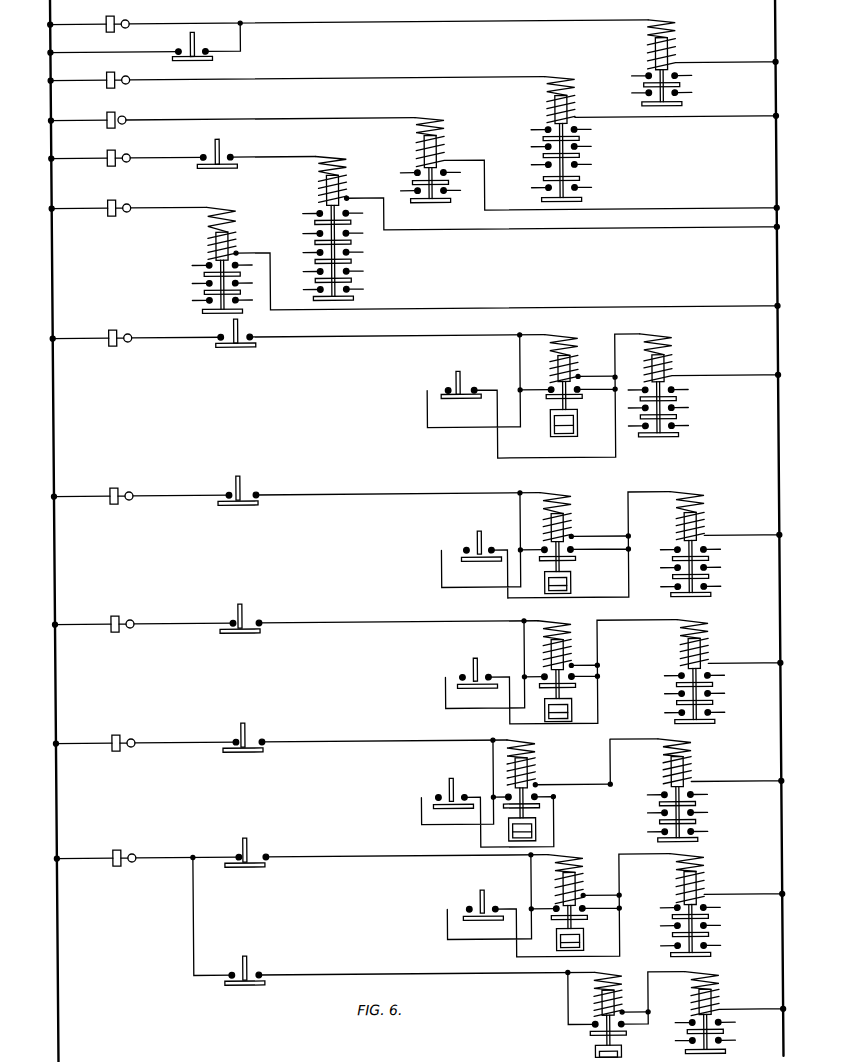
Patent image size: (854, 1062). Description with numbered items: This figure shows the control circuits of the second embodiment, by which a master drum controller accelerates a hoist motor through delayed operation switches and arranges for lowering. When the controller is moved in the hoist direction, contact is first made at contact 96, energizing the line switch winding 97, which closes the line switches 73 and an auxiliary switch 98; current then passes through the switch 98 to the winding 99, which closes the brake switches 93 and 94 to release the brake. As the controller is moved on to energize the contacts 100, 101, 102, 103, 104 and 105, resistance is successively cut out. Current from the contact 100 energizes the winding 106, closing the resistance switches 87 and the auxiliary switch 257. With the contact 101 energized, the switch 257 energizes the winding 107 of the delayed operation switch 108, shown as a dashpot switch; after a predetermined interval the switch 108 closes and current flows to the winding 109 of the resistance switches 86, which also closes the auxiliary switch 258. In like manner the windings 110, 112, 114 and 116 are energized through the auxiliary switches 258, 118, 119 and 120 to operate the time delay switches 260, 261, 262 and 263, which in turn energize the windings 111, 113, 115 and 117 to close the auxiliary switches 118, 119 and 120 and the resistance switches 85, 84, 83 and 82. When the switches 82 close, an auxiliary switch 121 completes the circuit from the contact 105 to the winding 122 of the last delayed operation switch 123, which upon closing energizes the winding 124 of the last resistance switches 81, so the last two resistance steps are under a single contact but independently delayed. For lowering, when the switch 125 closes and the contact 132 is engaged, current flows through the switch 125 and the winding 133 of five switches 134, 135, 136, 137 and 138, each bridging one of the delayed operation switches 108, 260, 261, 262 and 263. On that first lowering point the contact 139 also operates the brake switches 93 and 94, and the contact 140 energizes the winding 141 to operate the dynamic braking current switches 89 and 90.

The contact 139 is at (129, 28).
The auxiliary switch 98 is at (212, 55).
The contact 96 is at (129, 84).
The contact 140 is at (125, 124).
The contact 132 is at (129, 162).
The switch 125 is at (225, 160).
The contact 100 is at (129, 207).
The winding 99 is at (676, 29).
The brake switch 93 is at (692, 81).
The brake switch 94 is at (692, 98).
The line switch winding 97 is at (574, 87).
The line switch 73 is at (591, 134).
The winding 141 is at (440, 125).
The dynamic braking current switch 89 is at (448, 176).
The dynamic braking current switch 90 is at (448, 194).
The winding 133 is at (338, 165).
The switch 134 is at (316, 215).
The switch 135 is at (316, 236).
The switch 137 is at (316, 274).
The switch 138 is at (316, 292).
The winding 106 is at (236, 217).
The resistance switch 87 is at (204, 283).
The auxiliary switch 257 is at (204, 301).
The contact 101 is at (129, 342).
The winding 107 is at (556, 343).
The delayed operation switch 108 is at (545, 392).
The winding 109 is at (672, 348).
The resistance switch 86 is at (680, 393).
The auxiliary switch 258 is at (682, 430).
The contact 102 is at (129, 500).
The winding 110 is at (566, 503).
The time delay switch 260 is at (539, 552).
The winding 111 is at (690, 501).
The resistance switch 85 is at (700, 553).
The auxiliary switch 118 is at (702, 590).
The contact 103 is at (129, 628).
The winding 112 is at (560, 636).
The time delay switch 261 is at (539, 680).
The switch 136 is at (458, 679).
The winding 113 is at (698, 631).
The resistance switch 84 is at (703, 680).
The auxiliary switch 119 is at (703, 716).
The contact 104 is at (129, 747).
The winding 114 is at (530, 757).
The time delay switch 262 is at (499, 799).
The winding 115 is at (680, 753).
The resistance switch 83 is at (690, 798).
The auxiliary switch 120 is at (698, 835).
The contact 105 is at (129, 862).
The winding 116 is at (565, 863).
The time delay switch 263 is at (545, 912).
The winding 117 is at (690, 867).
The resistance switch 82 is at (700, 911).
The auxiliary switch 121 is at (700, 948).
The winding 122 is at (602, 981).
The delayed operation switch 123 is at (583, 1032).
The winding 124 is at (715, 983).
The resistance switch 81 is at (712, 1027).